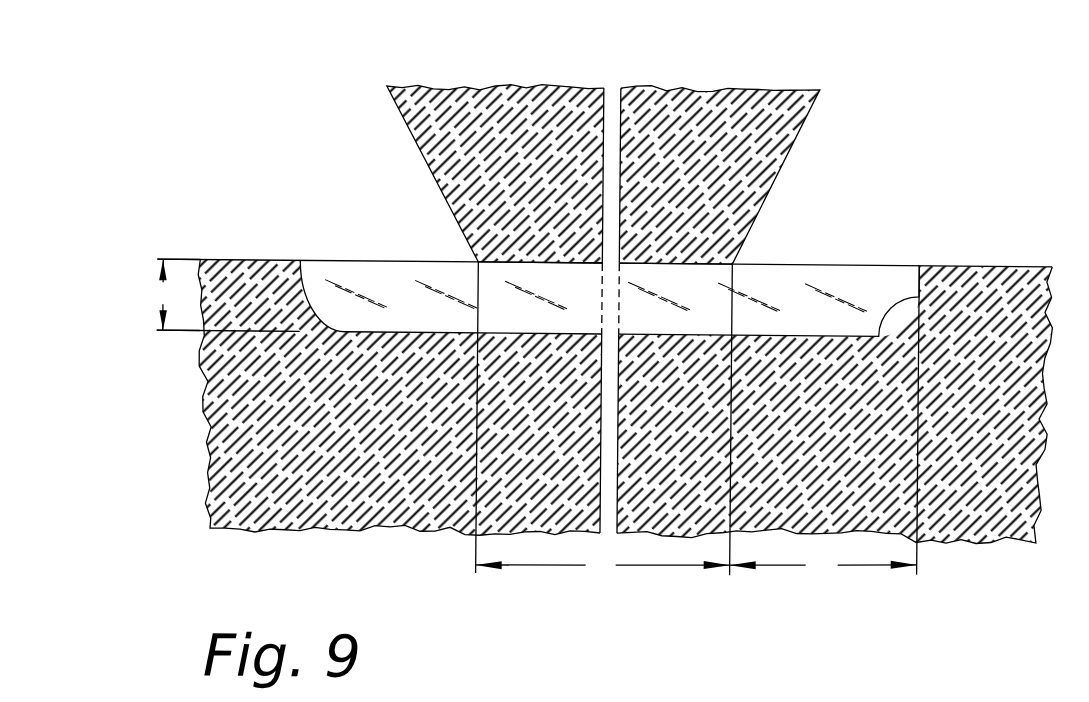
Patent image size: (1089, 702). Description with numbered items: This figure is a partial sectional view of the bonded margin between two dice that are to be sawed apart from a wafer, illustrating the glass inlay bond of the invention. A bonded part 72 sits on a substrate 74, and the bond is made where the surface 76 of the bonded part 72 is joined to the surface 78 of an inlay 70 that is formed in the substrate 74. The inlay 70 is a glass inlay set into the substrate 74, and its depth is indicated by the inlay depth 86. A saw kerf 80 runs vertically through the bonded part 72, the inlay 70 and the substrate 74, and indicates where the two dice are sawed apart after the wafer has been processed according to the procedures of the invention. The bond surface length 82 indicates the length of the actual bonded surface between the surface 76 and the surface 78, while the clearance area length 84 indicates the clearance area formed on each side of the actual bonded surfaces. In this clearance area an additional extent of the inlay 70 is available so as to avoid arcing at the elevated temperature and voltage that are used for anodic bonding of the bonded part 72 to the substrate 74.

The inlay 70 is at (825, 301).
The bonded part 72 is at (750, 126).
The substrate 74 is at (960, 297).
The surface of the bonded part 76 is at (712, 257).
The surface of the inlay 78 is at (770, 264).
The saw kerf 80 is at (609, 90).
The bond surface length 82 is at (604, 421).
The clearance area length 84 is at (825, 422).
The inlay depth 86 is at (177, 294).